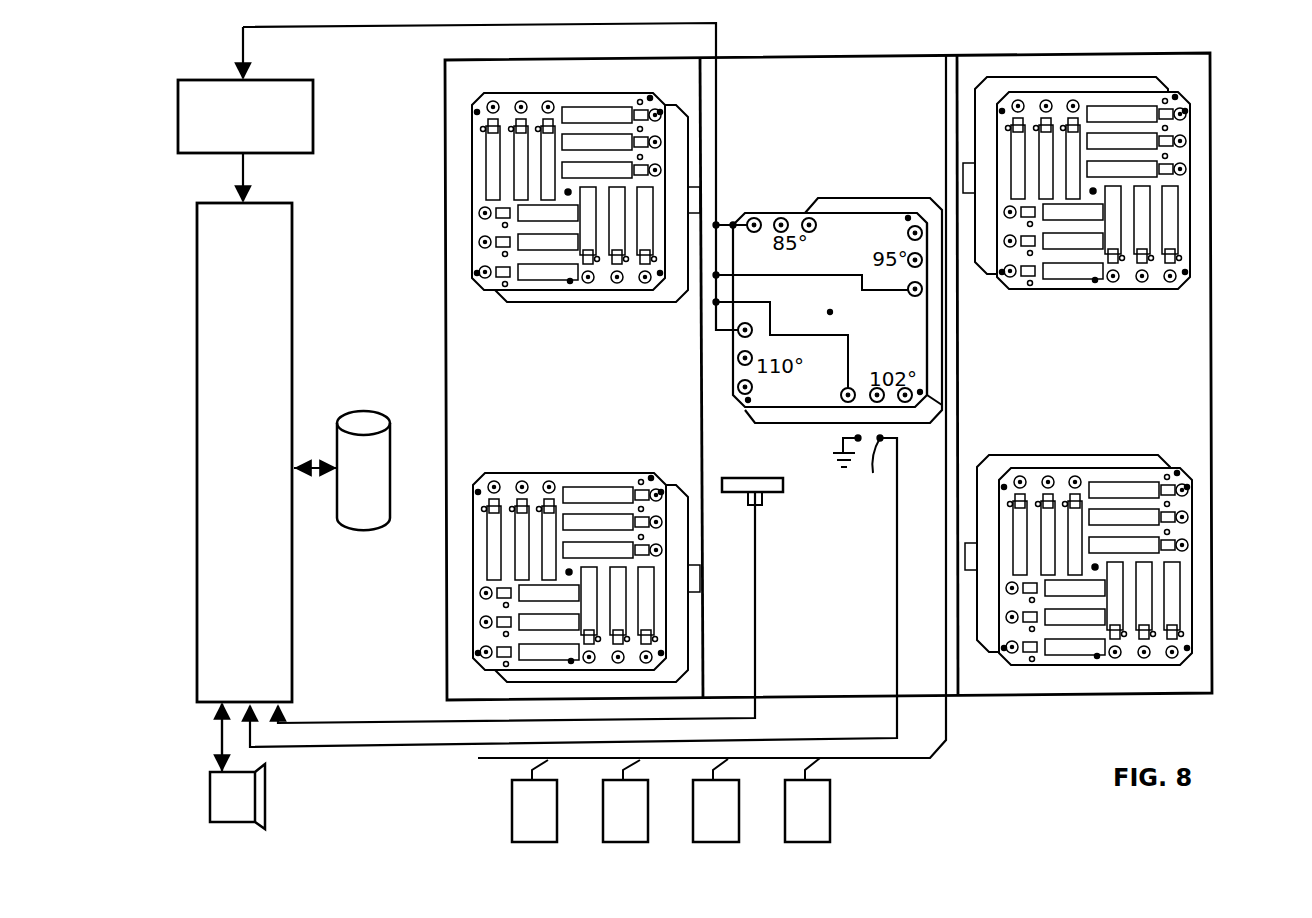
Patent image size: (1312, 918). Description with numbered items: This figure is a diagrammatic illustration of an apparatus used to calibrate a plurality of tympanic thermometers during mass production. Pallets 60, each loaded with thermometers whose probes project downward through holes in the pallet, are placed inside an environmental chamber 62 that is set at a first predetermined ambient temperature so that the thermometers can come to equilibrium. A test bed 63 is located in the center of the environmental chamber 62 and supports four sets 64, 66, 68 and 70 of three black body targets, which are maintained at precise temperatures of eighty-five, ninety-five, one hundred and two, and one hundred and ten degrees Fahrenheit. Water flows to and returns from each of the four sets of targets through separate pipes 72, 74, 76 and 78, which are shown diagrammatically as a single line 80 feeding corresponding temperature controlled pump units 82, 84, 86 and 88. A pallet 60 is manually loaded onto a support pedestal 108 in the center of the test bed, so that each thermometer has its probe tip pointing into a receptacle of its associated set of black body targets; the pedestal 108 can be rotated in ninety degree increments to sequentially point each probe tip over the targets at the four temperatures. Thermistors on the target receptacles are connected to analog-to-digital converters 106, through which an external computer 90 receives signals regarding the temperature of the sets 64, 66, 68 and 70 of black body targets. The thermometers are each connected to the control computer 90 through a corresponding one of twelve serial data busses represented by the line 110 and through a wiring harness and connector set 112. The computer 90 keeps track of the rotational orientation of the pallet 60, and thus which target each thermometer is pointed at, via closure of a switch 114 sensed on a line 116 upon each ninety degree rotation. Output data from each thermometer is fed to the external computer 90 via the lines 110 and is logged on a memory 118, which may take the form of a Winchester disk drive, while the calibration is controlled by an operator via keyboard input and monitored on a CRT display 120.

The pallet 60 is at (586, 92).
The environmental chamber 62 is at (1222, 345).
The test bed 63 is at (722, 340).
The set of black body targets 64 is at (809, 217).
The set of black body targets 66 is at (923, 290).
The set of black body targets 68 is at (905, 403).
The set of black body targets 70 is at (737, 386).
The water pipe 72 is at (848, 198).
The water pipe 74 is at (936, 207).
The water pipe 76 is at (948, 398).
The water pipe 78 is at (785, 423).
The single line 80 is at (888, 758).
The temperature controlled pump unit 82 is at (534, 801).
The temperature controlled pump unit 84 is at (625, 801).
The temperature controlled pump unit 86 is at (716, 800).
The temperature controlled pump unit 88 is at (807, 800).
The external computer 90 is at (292, 205).
The analog-to-digital converters 106 is at (297, 82).
The support pedestal 108 is at (830, 312).
The serial data busses 110 is at (330, 723).
The wiring harness and connector set 112 is at (770, 491).
The switch 114 is at (856, 462).
The line 116 is at (316, 748).
The memory 118 is at (372, 413).
The CRT display 120 is at (240, 805).